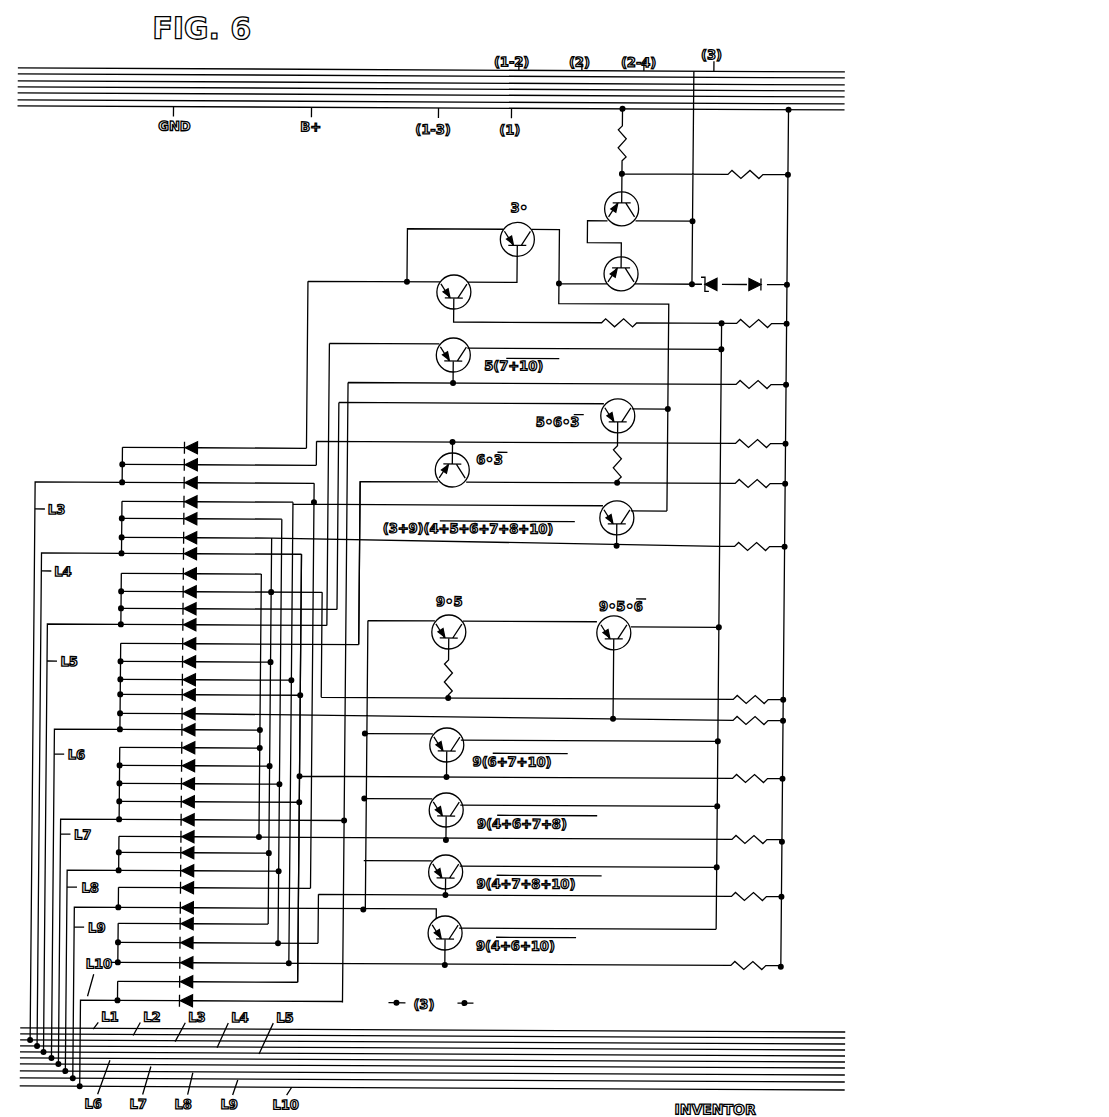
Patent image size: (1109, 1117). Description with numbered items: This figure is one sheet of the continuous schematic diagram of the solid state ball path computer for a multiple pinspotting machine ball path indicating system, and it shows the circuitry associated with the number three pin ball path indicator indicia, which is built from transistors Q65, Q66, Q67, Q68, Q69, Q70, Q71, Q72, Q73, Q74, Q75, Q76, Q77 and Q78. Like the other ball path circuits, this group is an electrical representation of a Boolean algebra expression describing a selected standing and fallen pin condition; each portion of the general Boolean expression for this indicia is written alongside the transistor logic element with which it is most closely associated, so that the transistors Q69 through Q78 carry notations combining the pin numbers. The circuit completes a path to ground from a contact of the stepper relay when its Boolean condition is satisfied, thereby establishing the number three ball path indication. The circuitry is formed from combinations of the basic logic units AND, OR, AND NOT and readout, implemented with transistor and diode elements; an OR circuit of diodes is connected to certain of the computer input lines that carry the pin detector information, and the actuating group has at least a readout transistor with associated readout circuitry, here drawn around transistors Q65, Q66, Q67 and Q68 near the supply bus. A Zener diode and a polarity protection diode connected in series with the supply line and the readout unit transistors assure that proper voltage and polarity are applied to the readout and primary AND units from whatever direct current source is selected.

The transistor Q65 is at (606, 202).
The transistor Q66 is at (503, 239).
The transistor Q67 is at (616, 271).
The transistor Q68 is at (435, 292).
The transistor Q69 is at (434, 355).
The transistor Q70 is at (632, 420).
The transistor Q71 is at (433, 468).
The transistor Q72 is at (634, 518).
The transistor Q73 is at (469, 632).
The transistor Q74 is at (632, 634).
The transistor Q75 is at (428, 745).
The transistor Q76 is at (429, 810).
The transistor Q77 is at (428, 872).
The transistor Q78 is at (428, 933).